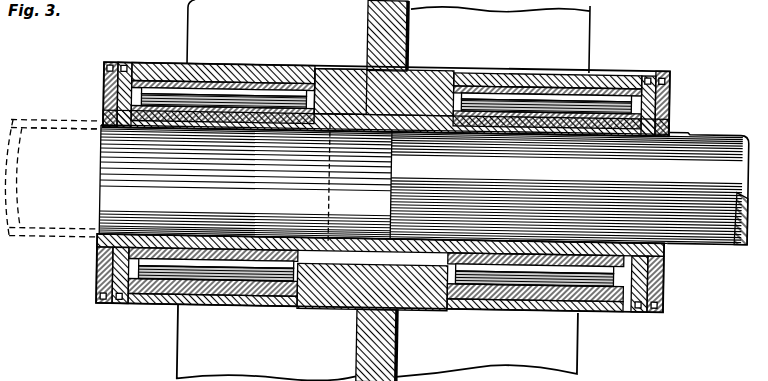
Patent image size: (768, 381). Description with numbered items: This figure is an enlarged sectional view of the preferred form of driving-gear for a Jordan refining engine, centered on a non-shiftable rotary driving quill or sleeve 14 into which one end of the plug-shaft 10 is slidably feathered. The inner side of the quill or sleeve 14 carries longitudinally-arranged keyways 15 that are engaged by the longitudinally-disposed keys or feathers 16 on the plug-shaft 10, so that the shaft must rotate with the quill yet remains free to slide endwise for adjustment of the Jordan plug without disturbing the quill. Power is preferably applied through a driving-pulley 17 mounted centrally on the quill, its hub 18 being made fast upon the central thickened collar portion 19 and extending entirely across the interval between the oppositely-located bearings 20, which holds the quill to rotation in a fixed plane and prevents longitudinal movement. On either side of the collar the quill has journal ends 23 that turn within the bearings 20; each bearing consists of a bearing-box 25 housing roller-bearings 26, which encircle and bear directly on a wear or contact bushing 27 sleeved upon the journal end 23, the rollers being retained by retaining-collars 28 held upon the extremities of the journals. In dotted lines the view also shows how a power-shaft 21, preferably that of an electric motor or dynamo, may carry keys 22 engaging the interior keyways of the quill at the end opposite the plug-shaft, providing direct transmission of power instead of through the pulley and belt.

The plug-shaft 10 is at (421, 185).
The driving quill or sleeve 14 is at (416, 112).
The keyways 15 is at (352, 124).
The keys or feathers 16 is at (687, 125).
The driving-pulley 17 is at (588, 17).
The hub 18 is at (404, 58).
The central thickened collar portion 19 is at (357, 257).
The bearings 20 is at (242, 303).
The power-shaft 21 is at (25, 119).
The keys 22 is at (39, 122).
The journal ends 23 is at (549, 290).
The bearing-boxes 25 is at (626, 294).
The roller-bearings 26 is at (597, 281).
The wear or contact bushing 27 is at (669, 284).
The retaining-collars 28 is at (100, 282).